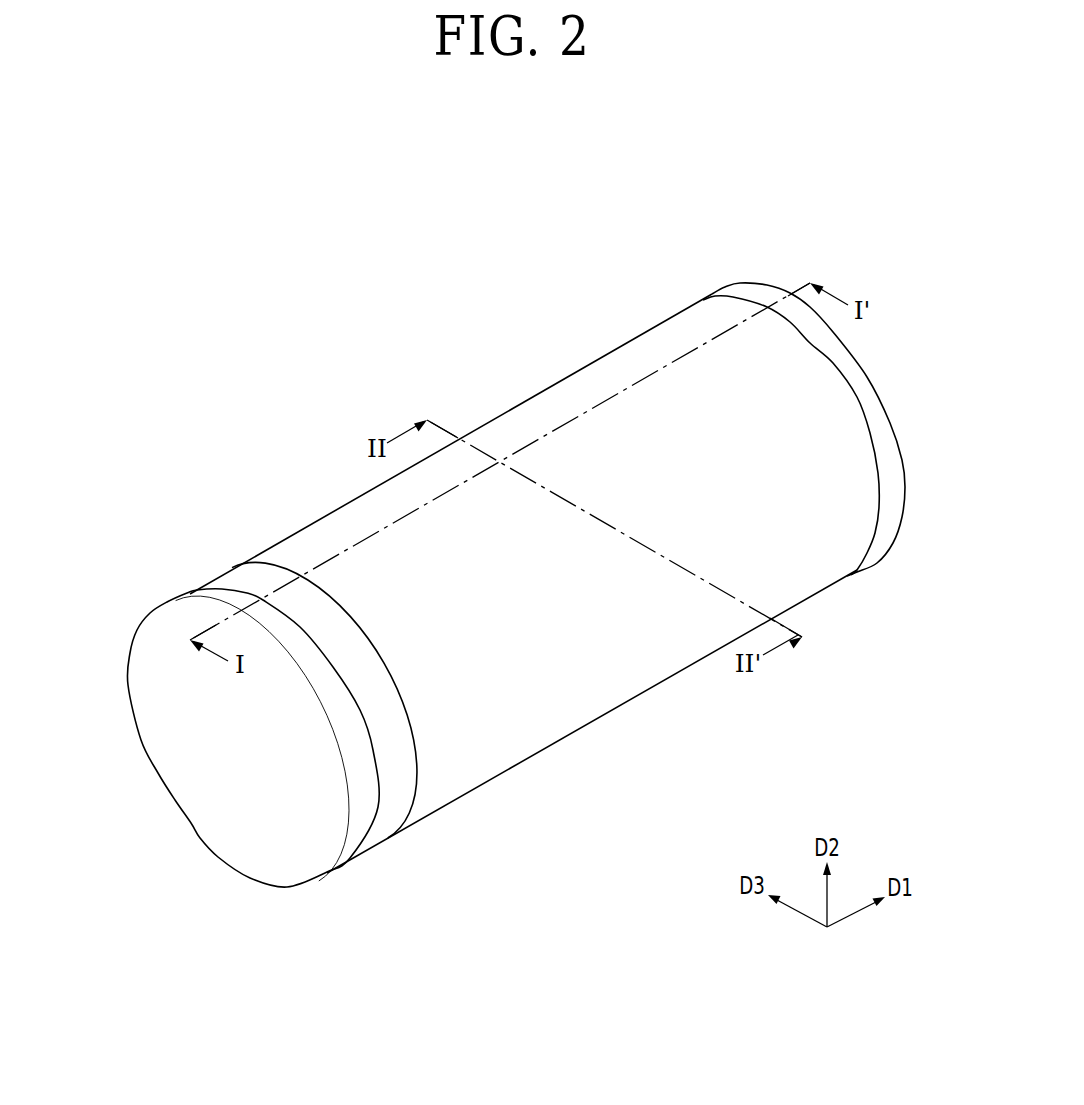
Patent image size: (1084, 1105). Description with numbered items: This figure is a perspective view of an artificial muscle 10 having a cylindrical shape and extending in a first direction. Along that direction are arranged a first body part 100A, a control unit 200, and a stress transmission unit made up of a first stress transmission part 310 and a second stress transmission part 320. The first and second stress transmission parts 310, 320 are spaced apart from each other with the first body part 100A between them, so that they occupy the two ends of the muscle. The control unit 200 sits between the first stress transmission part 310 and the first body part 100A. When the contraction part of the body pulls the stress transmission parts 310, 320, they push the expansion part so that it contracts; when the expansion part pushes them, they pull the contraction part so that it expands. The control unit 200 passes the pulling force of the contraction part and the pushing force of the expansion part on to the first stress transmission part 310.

The artificial muscle 10 is at (371, 311).
The first body part 100A is at (612, 357).
The control unit 200 is at (230, 577).
The first stress transmission part 310 is at (198, 592).
The second stress transmission part 320 is at (727, 283).